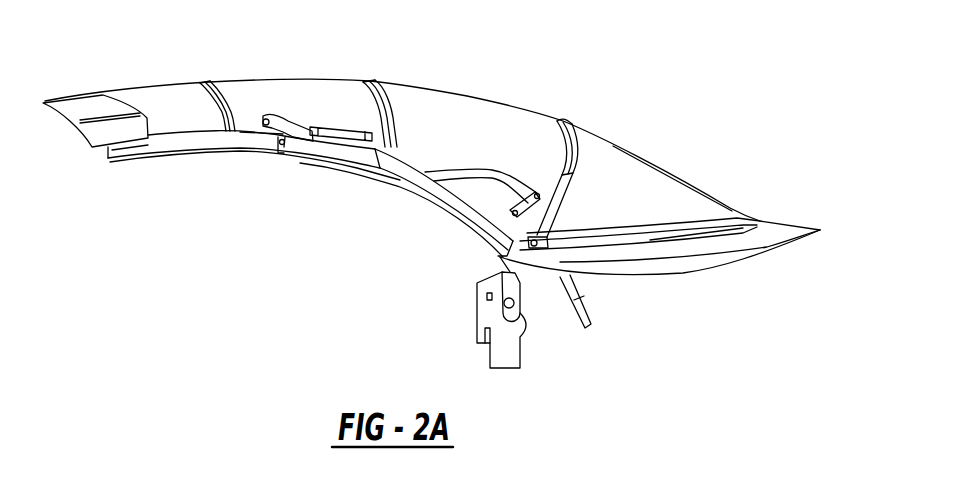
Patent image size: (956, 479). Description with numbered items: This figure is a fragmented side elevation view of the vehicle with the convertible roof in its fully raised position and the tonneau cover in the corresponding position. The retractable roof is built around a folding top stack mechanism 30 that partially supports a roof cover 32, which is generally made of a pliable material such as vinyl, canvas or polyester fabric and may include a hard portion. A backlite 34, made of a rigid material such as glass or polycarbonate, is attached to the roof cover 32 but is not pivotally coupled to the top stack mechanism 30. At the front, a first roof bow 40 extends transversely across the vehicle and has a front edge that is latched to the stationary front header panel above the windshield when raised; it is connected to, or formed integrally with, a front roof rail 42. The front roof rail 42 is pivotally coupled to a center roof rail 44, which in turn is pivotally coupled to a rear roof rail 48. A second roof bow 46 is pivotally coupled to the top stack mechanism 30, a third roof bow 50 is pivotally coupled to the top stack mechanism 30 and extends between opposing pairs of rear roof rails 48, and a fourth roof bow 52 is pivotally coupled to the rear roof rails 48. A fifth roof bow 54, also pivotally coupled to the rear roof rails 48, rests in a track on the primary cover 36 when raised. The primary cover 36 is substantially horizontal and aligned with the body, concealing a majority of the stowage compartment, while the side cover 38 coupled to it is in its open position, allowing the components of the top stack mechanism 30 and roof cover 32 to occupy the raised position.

The top stack mechanism 30 is at (276, 273).
The roof cover 32 is at (467, 96).
The backlite 34 is at (694, 184).
The primary cover 36 is at (780, 240).
The side cover 38 is at (587, 292).
The first roof bow 40 is at (126, 133).
The front roof rail 42 is at (188, 142).
The center roof rail 44 is at (343, 157).
The second roof bow 46 is at (218, 108).
The rear roof rail 48 is at (435, 194).
The third roof bow 50 is at (383, 93).
The fourth roof bow 52 is at (577, 140).
The fifth roof bow 54 is at (740, 220).